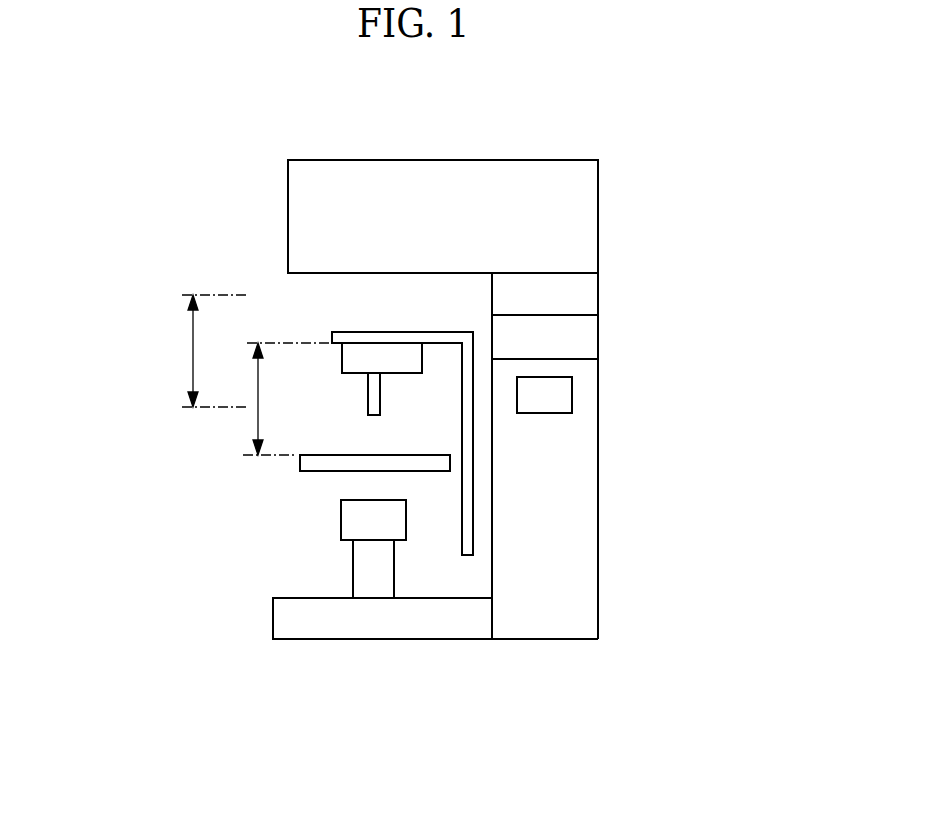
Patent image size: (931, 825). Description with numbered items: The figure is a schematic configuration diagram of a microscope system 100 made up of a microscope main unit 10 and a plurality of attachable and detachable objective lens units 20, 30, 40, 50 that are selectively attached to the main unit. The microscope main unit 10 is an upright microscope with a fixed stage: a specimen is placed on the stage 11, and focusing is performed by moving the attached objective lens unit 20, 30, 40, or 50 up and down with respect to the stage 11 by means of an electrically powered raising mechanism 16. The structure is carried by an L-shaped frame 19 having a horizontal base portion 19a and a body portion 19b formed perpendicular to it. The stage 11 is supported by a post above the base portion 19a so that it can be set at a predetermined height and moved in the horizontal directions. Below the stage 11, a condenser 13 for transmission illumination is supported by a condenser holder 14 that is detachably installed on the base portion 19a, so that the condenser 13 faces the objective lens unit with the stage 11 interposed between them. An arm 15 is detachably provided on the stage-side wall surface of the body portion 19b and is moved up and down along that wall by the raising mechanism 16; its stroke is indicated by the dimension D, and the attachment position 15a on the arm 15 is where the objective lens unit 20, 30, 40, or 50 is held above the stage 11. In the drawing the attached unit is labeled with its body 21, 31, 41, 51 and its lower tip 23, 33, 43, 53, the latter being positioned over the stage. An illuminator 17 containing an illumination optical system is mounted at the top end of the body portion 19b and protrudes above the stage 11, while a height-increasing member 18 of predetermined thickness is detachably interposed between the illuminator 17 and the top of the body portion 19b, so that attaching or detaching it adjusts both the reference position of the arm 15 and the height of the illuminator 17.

The microscope system 100 is at (727, 150).
The microscope main unit 10 is at (655, 287).
The stage 11 is at (300, 462).
The condenser 13 is at (341, 520).
The condenser holder 14 is at (353, 575).
The arm 15 is at (443, 333).
The attachment position 15a is at (322, 358).
The raising mechanism 16 is at (572, 394).
The illuminator 17 is at (378, 168).
The height-increasing member 18 is at (598, 336).
The frame 19 is at (562, 652).
The base portion 19a is at (360, 640).
The body portion 19b is at (598, 530).
The objective lens unit 20 is at (412, 394).
The head carriage 21 is at (380, 355).
The nozzle 23 is at (367, 405).
The objective lens unit 30 is at (374, 393).
The head carriage (second embodiment) 31 is at (382, 358).
The nozzle (second embodiment) 33 is at (374, 394).
The objective lens unit 40 is at (374, 393).
The head carriage (third embodiment) 41 is at (382, 358).
The nozzle (third embodiment) 43 is at (374, 394).
The objective lens unit 50 is at (374, 393).
The head carriage (fourth embodiment) 51 is at (382, 358).
The nozzle (fourth embodiment) 53 is at (374, 394).